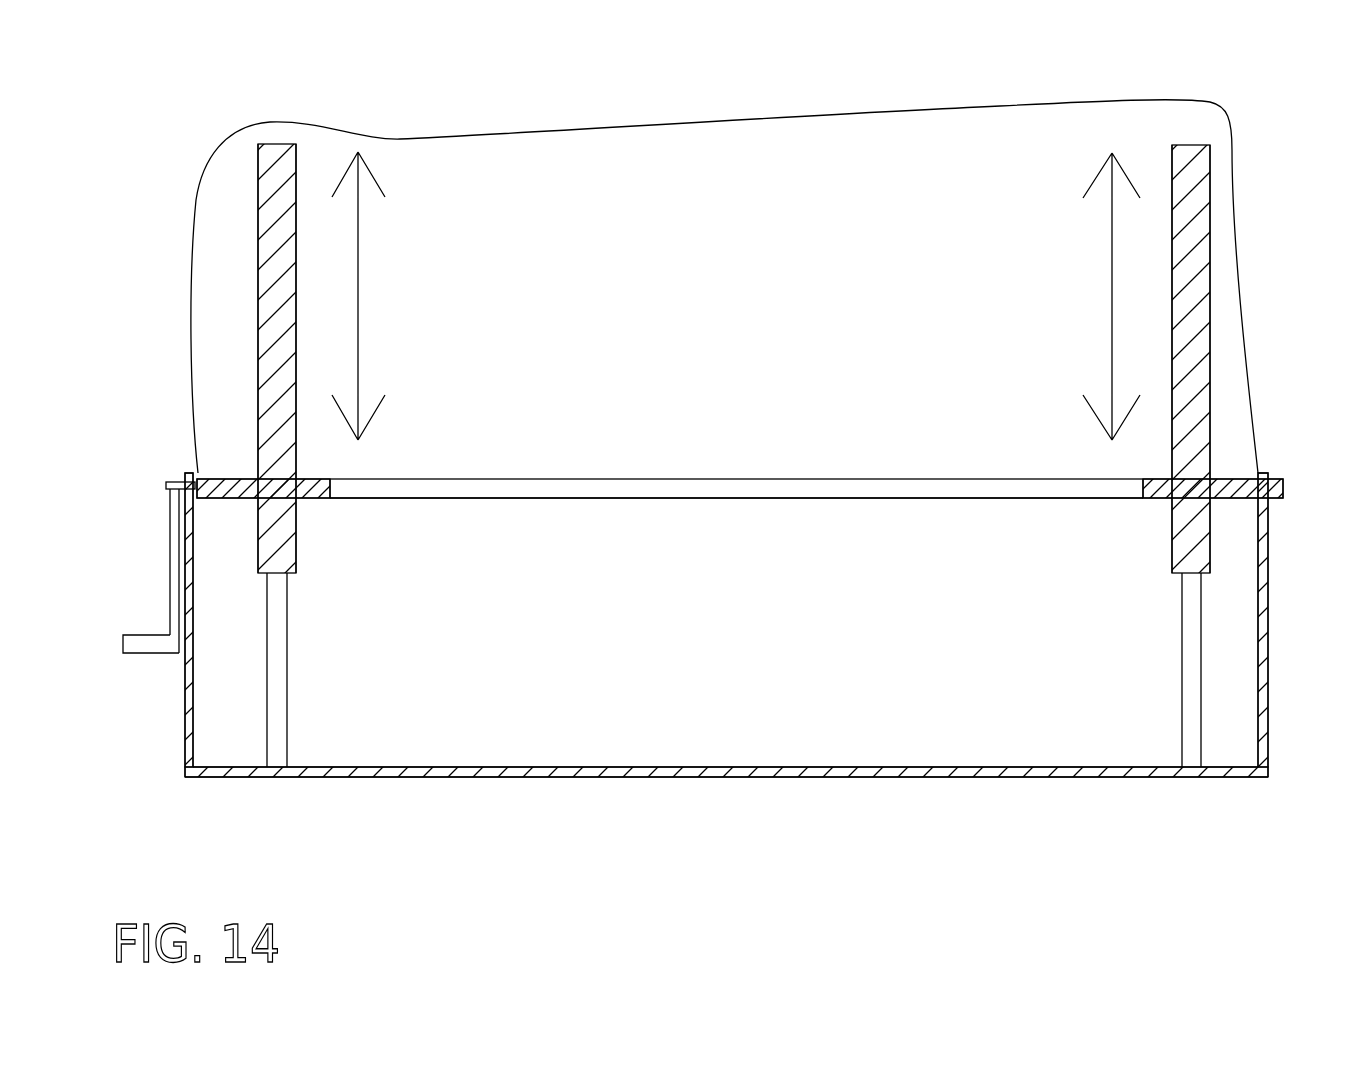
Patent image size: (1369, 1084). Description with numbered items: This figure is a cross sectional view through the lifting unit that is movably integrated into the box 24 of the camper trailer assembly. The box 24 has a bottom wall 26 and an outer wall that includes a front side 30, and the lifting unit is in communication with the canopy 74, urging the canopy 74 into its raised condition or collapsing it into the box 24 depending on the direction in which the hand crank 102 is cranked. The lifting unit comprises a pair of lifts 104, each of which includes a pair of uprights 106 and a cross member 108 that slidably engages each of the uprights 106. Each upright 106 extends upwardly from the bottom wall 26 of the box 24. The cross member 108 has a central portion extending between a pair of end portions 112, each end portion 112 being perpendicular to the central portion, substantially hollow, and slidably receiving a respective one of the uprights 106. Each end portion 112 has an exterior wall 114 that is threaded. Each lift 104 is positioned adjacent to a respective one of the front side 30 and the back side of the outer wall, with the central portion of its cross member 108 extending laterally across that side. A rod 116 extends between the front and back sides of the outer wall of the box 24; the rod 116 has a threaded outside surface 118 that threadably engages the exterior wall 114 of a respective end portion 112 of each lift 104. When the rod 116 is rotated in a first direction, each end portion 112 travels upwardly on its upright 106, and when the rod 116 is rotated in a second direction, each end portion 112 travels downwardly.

The box 24 is at (185, 704).
The bottom wall 26 is at (507, 778).
The front side 30 is at (185, 517).
The canopy 74 is at (197, 183).
The hand crank 102 is at (173, 482).
The lift 104 is at (312, 264).
The upright 106 is at (287, 691).
The cross member 108 is at (258, 148).
The end portion 112 is at (258, 222).
The exterior wall 114 is at (280, 290).
The rod 116 is at (778, 498).
The outside surface 118 is at (1215, 478).